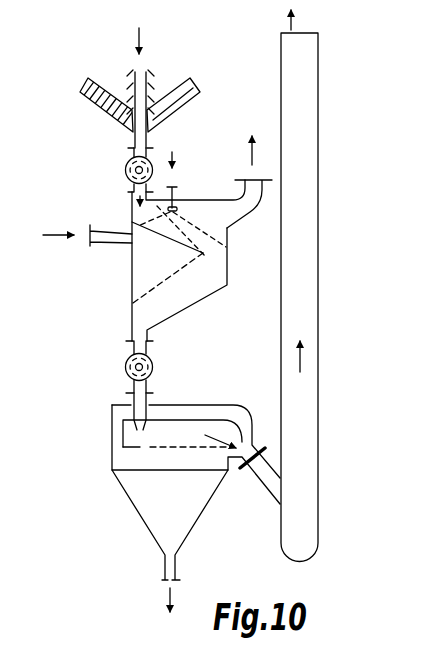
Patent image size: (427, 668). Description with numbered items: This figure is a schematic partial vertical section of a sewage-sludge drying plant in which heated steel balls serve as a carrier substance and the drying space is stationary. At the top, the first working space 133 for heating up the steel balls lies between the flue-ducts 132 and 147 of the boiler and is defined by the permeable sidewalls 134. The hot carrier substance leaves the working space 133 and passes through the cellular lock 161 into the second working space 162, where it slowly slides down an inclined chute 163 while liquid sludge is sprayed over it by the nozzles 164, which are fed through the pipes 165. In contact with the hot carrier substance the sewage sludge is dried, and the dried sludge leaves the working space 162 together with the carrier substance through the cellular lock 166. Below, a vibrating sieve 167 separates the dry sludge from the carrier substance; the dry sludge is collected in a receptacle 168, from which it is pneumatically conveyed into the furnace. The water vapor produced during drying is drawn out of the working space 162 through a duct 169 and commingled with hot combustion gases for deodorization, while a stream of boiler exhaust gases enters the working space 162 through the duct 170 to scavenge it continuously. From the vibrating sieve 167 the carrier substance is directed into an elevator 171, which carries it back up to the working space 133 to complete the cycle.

The flue-duct 132 is at (93, 91).
The first working space 133 is at (128, 70).
The permeable sidewalls 134 is at (149, 70).
The flue-duct 147 is at (175, 91).
The cellular lock 161 is at (127, 162).
The second working space 162 is at (147, 282).
The inclined chute 163 is at (170, 239).
The nozzles 164 is at (178, 200).
The pipes 165 is at (176, 204).
The cellular lock 166 is at (125, 358).
The vibrating sieve 167 is at (158, 447).
The receptacle 168 is at (143, 528).
The duct 169 is at (250, 212).
The duct 170 is at (130, 230).
The elevator 171 is at (320, 392).